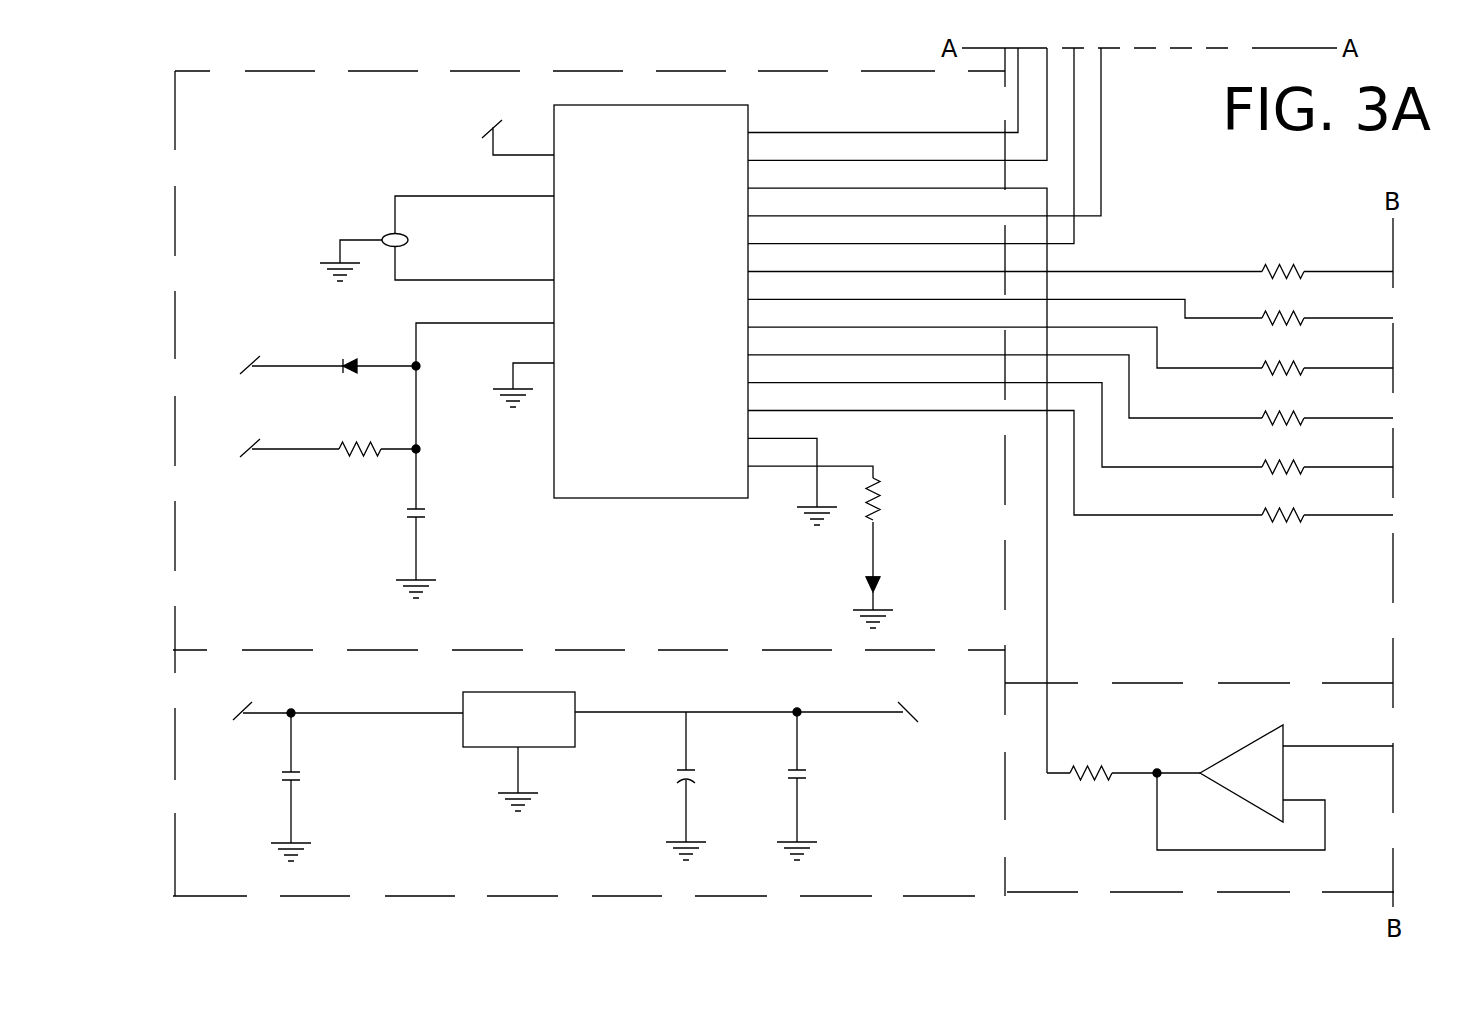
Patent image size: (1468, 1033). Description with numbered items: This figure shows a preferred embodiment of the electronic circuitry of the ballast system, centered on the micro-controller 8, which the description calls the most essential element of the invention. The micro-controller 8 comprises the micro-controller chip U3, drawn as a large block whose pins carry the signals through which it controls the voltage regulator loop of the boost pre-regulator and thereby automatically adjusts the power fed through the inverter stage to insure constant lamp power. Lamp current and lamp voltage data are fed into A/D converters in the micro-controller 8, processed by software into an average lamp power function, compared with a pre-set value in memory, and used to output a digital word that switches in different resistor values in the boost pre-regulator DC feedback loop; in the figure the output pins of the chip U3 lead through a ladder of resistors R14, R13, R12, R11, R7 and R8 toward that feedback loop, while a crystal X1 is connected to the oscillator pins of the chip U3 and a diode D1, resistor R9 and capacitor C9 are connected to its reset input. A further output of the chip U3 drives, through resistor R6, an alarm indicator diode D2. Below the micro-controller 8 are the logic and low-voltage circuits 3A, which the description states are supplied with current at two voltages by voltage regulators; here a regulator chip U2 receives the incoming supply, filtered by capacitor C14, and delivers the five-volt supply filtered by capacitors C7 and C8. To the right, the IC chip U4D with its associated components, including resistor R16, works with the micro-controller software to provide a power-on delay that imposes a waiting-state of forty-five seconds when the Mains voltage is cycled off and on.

The micro-controller 8 is at (175, 214).
The logic and low-voltage circuits 3A is at (173, 754).
The micro-controller chip U3 is at (650, 301).
The voltage regulator 78L05ACM U2 is at (475, 734).
The IC chip U4D is at (1275, 772).
The 16 MHz crystal X1 is at (437, 239).
The diode 1N914 D1 is at (305, 353).
The alarm LED D2 is at (899, 565).
The resistor 332 R6 is at (902, 503).
The resistor 118K R7 is at (1070, 428).
The resistor 60.4K R8 is at (1070, 467).
The resistor 10.0K R9 is at (305, 447).
The resistor 237K R11 is at (1070, 390).
The resistor 475K R12 is at (1070, 351).
The resistor 953K R13 is at (1070, 306).
The resistor 1.91M R14 is at (1070, 259).
The resistor 4.75K R16 is at (1123, 772).
The capacitor 10uF C7 is at (707, 786).
The capacitor .1uF C8 is at (820, 784).
The capacitor .1uF C9 is at (436, 532).
The capacitor .1uF C14 is at (266, 787).